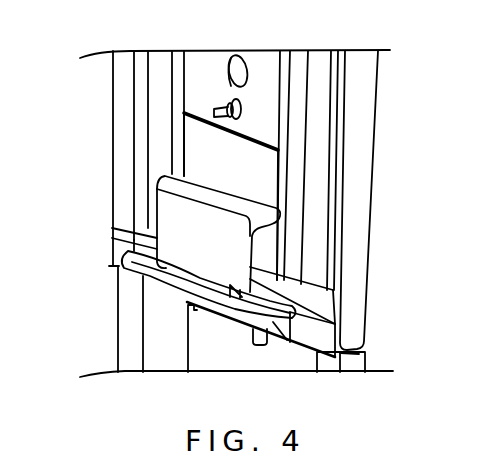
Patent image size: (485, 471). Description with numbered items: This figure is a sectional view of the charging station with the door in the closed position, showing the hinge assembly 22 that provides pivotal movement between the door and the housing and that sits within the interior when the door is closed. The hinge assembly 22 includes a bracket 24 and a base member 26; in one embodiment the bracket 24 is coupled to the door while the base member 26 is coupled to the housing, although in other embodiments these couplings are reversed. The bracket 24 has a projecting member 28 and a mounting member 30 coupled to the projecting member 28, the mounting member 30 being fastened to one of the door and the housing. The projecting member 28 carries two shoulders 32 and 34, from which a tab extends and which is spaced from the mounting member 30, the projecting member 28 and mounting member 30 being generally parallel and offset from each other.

The hinge assembly 22 is at (97, 179).
The bracket 24 is at (238, 148).
The base member 26 is at (289, 338).
The projecting member 28 is at (170, 238).
The mounting member 30 is at (264, 187).
The shoulder 32 is at (141, 264).
The shoulder 34 is at (237, 305).